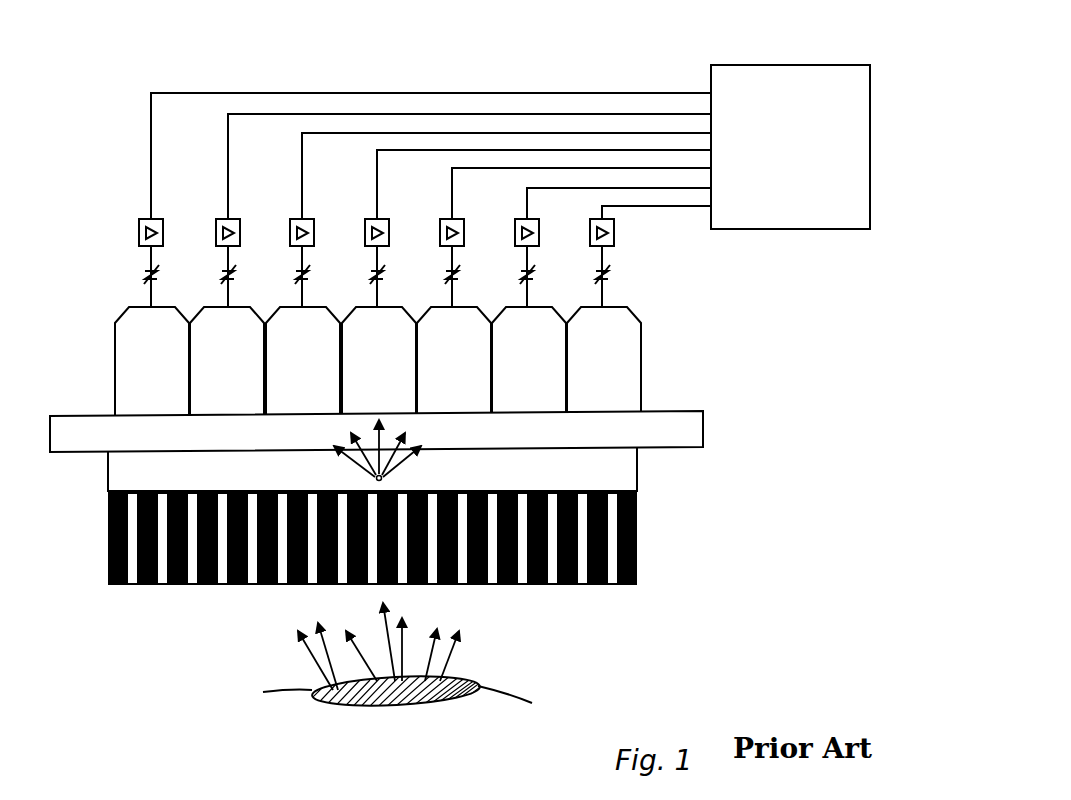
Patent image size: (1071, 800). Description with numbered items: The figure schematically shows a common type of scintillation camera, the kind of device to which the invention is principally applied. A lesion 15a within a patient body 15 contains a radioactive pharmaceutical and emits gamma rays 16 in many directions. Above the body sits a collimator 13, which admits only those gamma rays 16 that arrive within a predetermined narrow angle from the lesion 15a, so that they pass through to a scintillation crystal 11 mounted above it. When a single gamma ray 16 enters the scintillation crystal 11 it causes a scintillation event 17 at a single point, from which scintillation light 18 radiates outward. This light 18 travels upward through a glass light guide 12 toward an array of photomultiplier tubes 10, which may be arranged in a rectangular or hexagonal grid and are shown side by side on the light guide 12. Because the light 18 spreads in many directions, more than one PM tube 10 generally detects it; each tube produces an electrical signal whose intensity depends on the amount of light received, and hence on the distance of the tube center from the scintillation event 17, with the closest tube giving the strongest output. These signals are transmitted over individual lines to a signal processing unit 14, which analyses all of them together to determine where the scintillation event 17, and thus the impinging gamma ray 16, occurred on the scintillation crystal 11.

The photomultiplier tube 10 is at (158, 352).
The scintillation crystal 11 is at (148, 470).
The glass light guide 12 is at (102, 430).
The collimator 13 is at (263, 587).
The signal processing unit 14 is at (808, 205).
The patient body 15 is at (480, 708).
The lesion 15a is at (462, 678).
The gamma ray 16 is at (468, 641).
The scintillation event 17 is at (390, 478).
The scintillation light 18 is at (418, 433).